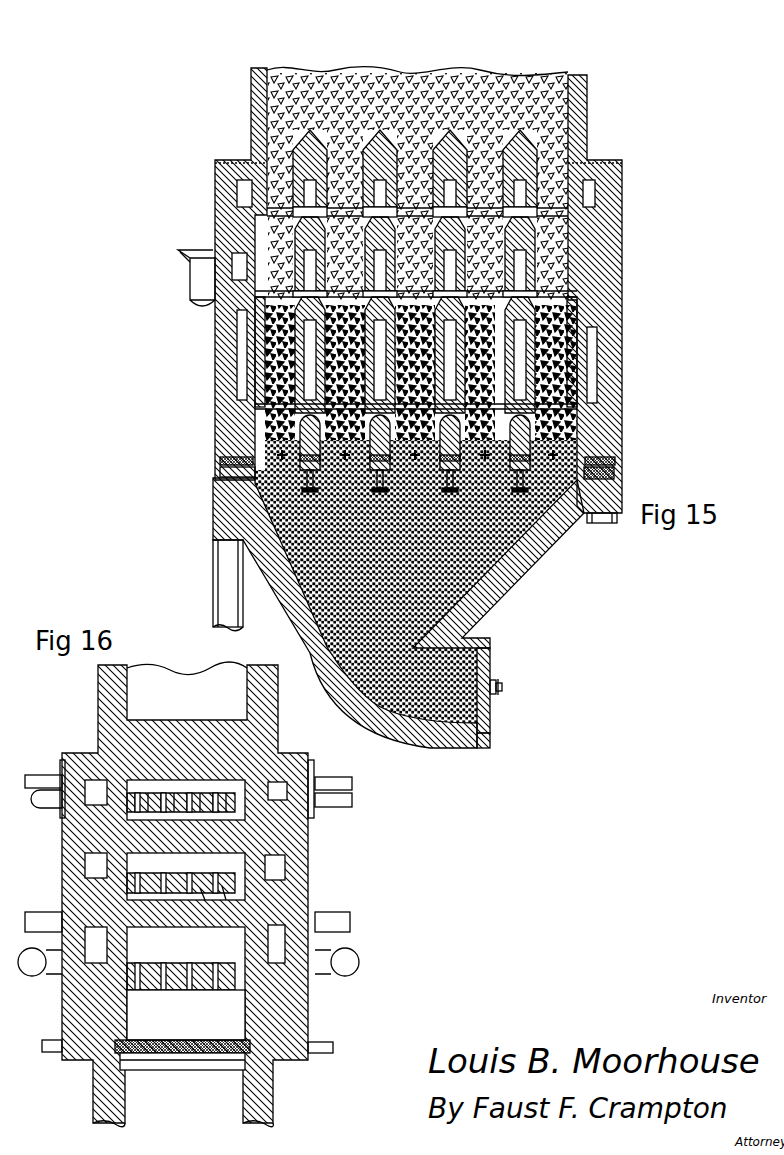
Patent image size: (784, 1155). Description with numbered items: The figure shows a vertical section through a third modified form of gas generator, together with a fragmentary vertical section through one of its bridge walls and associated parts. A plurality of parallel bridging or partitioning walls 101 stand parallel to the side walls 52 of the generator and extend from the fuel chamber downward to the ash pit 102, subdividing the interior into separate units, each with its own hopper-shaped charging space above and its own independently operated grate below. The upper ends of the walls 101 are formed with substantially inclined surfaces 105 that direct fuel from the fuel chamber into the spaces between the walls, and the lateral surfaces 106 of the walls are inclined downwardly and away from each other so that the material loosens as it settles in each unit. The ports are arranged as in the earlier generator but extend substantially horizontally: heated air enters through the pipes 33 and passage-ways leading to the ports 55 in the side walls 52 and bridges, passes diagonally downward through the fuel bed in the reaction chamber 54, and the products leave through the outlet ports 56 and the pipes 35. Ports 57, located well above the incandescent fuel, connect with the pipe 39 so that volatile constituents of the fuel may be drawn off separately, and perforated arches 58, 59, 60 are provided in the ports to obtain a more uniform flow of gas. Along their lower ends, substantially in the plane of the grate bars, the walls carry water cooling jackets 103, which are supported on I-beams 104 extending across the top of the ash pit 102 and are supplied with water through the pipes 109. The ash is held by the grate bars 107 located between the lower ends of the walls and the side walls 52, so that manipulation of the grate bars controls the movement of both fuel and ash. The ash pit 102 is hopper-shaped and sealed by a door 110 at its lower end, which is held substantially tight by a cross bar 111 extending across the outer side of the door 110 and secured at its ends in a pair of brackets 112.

In FIG. 15, the walls 101 is at (385, 165).
In FIG. 15, the inclined surfaces 105 is at (518, 98).
In FIG. 15, the ports 57 is at (268, 145).
In FIG. 16, the ports 57 is at (143, 800).
In FIG. 15, the lateral surfaces 106 is at (222, 242).
In FIG. 15, the pipes 33 is at (195, 292).
In FIG. 15, the ports 55 is at (285, 305).
In FIG. 16, the ports 55 is at (222, 886).
In FIG. 15, the side walls 52 is at (600, 305).
In FIG. 15, the reaction chamber 54 is at (240, 362).
In FIG. 15, the outlet ports 56 is at (240, 405).
In FIG. 16, the outlet ports 56 is at (150, 985).
In FIG. 15, the grate bars 107 is at (222, 461).
In FIG. 15, the water cooling jackets 103 is at (262, 478).
In FIG. 16, the water cooling jackets 103 is at (217, 1045).
In FIG. 15, the ash pit 102 is at (560, 530).
In FIG. 15, the I-beams 104 is at (498, 564).
In FIG. 16, the I-beams 104 is at (172, 1062).
In FIG. 15, the door 110 is at (492, 668).
In FIG. 15, the cross bar 111 is at (503, 686).
In FIG. 15, the brackets 112 is at (500, 695).
In FIG. 16, the perforated arch 58 is at (186, 751).
In FIG. 16, the pipe 39 is at (43, 787).
In FIG. 16, the perforated arch 59 is at (130, 883).
In FIG. 16, the pipes 35 is at (38, 928).
In FIG. 16, the perforated arch 60 is at (168, 975).
In FIG. 16, the pipes 109 is at (50, 1050).